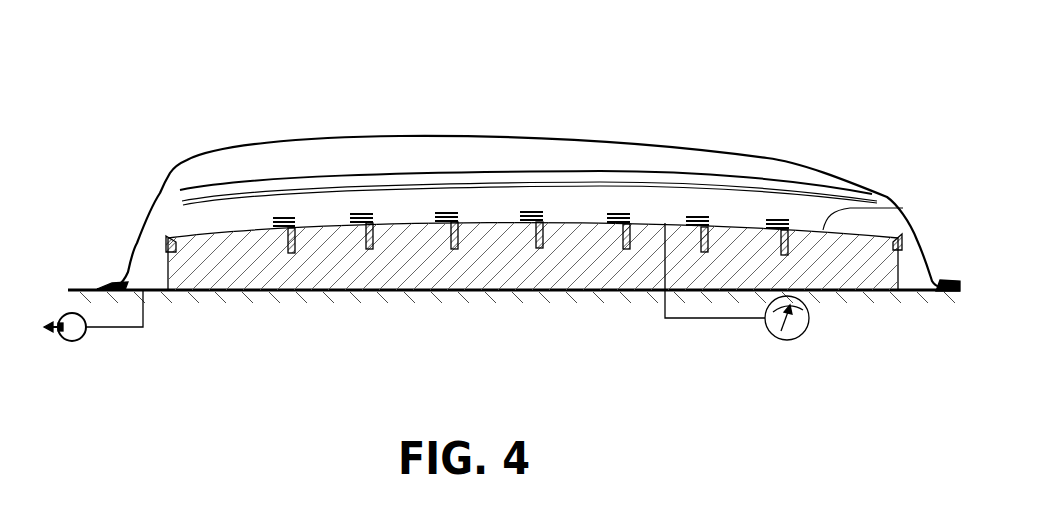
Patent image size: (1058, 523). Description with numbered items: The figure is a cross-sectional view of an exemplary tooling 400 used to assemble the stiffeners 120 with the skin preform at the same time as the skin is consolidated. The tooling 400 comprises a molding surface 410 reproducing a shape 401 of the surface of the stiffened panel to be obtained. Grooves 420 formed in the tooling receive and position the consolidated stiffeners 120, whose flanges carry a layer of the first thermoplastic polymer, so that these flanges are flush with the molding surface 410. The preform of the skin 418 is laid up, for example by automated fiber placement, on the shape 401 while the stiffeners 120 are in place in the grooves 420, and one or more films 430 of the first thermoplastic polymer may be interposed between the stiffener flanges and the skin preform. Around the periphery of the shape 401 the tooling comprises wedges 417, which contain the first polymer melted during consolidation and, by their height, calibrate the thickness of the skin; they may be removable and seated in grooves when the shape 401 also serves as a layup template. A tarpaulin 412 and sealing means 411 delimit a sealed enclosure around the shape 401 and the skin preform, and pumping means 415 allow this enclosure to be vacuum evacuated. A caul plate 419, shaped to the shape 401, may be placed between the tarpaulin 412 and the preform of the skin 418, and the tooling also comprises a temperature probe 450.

The tooling 400 is at (185, 89).
The shape 401 is at (163, 254).
The molding surface 410 is at (900, 208).
The sealing means 411 is at (115, 281).
The tarpaulin 412 is at (815, 172).
The pumping means 415 is at (72, 342).
The wedges 417 is at (167, 240).
The preform of the skin 418 is at (255, 180).
The caul plate 419 is at (510, 168).
The grooves 420 is at (452, 252).
The films 430 is at (290, 220).
The stiffeners 120 is at (295, 238).
The temperature probe 450 is at (665, 303).